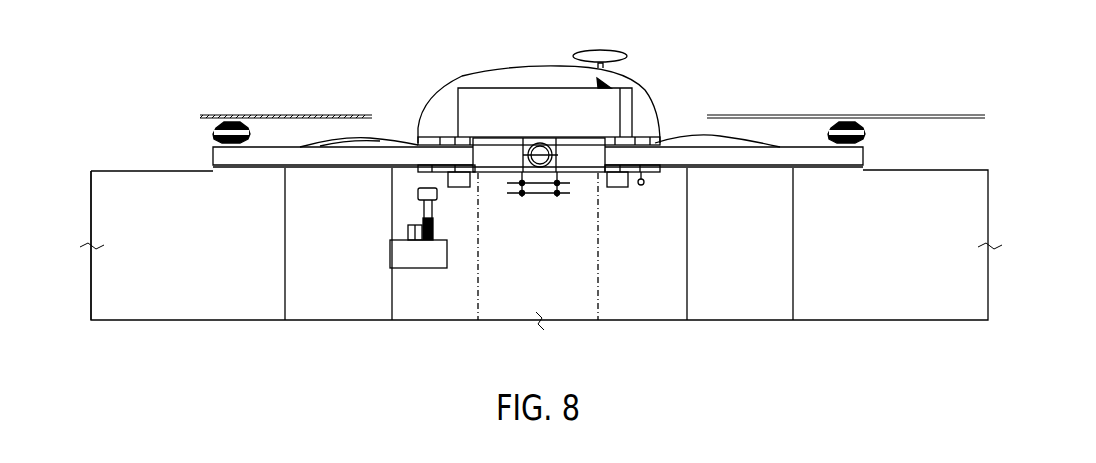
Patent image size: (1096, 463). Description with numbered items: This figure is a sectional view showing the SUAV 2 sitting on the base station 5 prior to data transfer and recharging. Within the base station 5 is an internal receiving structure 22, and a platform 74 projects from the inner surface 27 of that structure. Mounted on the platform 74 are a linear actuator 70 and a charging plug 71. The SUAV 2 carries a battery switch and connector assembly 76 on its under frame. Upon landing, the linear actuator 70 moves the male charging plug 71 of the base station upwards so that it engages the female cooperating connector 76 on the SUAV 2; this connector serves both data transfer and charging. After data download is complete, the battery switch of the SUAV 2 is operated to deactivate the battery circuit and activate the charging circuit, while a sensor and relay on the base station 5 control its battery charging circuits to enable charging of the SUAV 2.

The SUAV 2 is at (653, 107).
The base station 5 is at (935, 171).
The internal receiving structure 22 is at (285, 296).
The inner surface 27 is at (392, 293).
The linear actuator 70 is at (408, 231).
The charging plug 71 is at (418, 195).
The platform 74 is at (428, 270).
The battery switch and connector assembly 76 is at (435, 177).